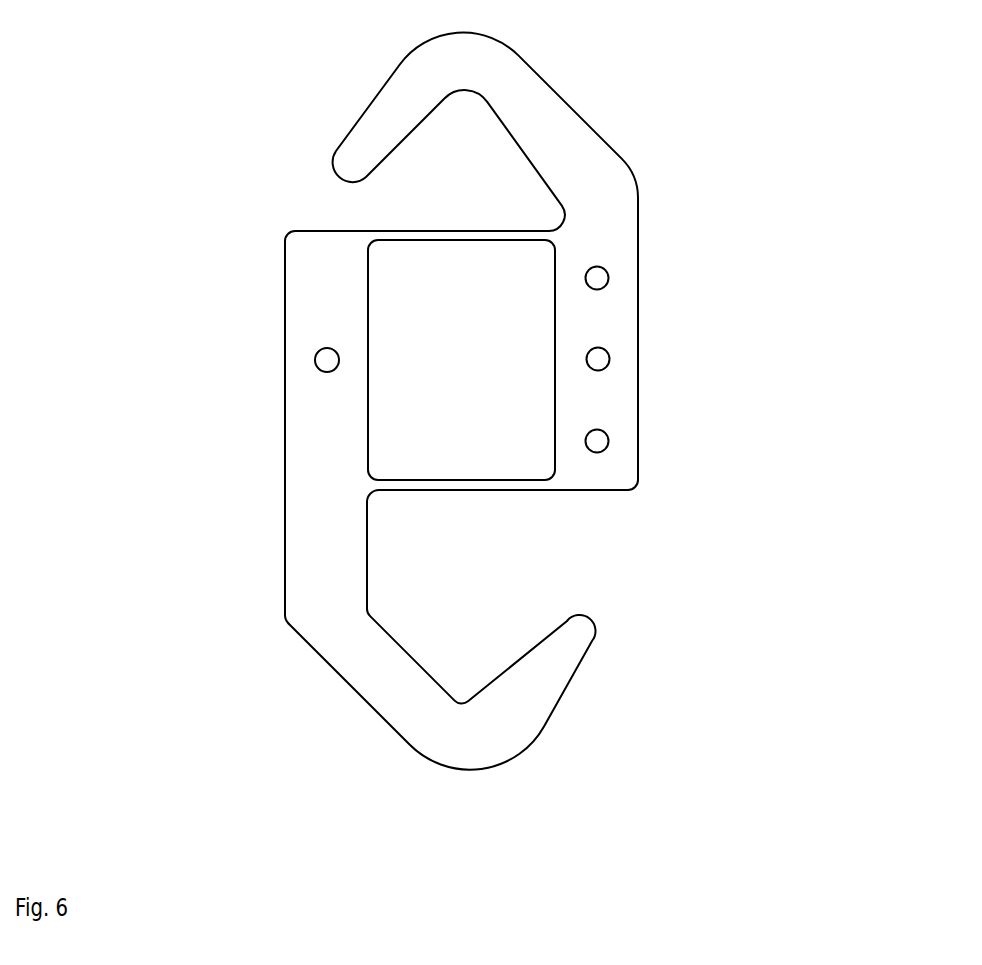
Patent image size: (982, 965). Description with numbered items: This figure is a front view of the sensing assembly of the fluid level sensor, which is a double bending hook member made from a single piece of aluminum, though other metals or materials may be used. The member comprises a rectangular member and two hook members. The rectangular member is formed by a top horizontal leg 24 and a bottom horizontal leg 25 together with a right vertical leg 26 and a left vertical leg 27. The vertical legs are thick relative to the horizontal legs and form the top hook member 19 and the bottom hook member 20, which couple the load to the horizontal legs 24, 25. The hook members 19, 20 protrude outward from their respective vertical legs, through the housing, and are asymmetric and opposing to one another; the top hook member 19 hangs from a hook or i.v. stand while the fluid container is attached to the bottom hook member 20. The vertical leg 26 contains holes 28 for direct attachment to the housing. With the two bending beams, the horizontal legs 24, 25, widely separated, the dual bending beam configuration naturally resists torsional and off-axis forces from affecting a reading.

The top hook member 19 is at (553, 107).
The bottom hook member 20 is at (522, 712).
The top horizontal leg 24 is at (405, 232).
The bottom horizontal leg 25 is at (497, 482).
The right vertical leg 26 is at (612, 316).
The left vertical leg 27 is at (295, 297).
The holes 28 is at (595, 277).